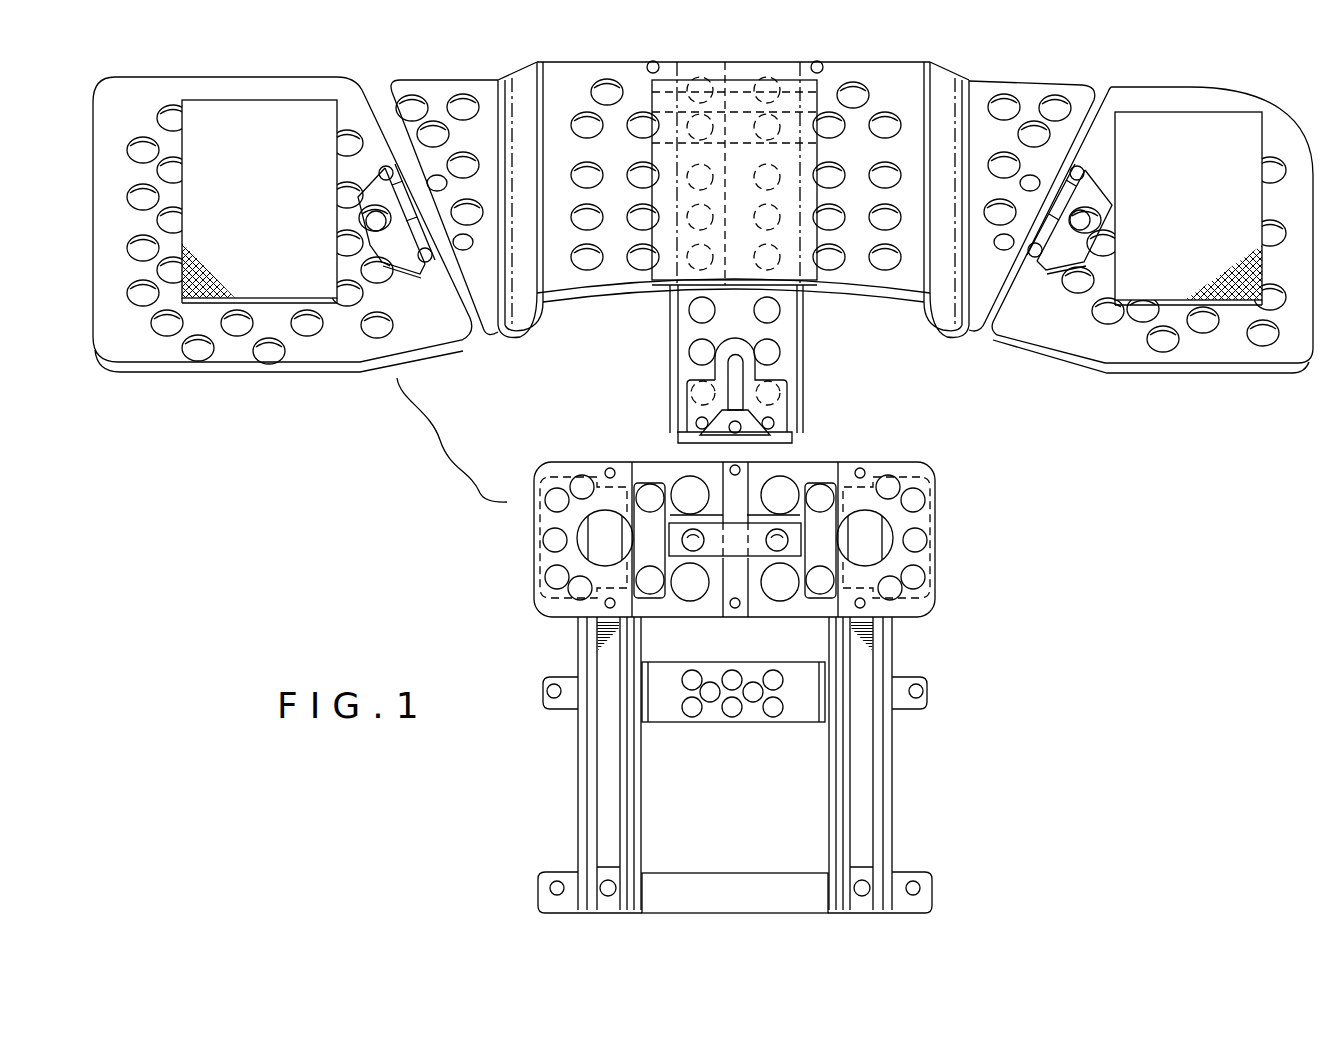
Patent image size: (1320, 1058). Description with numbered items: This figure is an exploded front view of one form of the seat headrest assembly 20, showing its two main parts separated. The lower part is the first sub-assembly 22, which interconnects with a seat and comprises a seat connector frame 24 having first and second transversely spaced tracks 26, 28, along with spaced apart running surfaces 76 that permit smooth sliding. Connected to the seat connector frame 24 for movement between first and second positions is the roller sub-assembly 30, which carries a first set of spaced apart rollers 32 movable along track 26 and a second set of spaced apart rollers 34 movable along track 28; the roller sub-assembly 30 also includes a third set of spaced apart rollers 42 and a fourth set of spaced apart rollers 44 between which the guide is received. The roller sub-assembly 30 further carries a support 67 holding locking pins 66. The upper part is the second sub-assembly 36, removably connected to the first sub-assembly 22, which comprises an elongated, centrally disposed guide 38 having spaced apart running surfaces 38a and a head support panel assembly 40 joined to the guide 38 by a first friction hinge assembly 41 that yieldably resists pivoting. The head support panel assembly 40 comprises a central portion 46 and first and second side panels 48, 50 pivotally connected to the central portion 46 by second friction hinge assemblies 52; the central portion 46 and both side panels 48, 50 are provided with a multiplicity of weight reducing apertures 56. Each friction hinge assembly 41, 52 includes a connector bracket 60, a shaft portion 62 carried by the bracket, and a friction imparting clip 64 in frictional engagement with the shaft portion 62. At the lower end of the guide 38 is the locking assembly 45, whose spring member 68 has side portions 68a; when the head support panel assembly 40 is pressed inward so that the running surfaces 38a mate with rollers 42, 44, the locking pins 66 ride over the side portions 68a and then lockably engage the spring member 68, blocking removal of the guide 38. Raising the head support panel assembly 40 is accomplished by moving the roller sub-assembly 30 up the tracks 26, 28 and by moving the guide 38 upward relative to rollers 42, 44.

The seat headrest assembly 20 is at (533, 380).
The first sub-assembly 22 is at (945, 598).
The seat connector frame 24 is at (895, 767).
The first track 26 is at (580, 648).
The second track 28 is at (892, 648).
The roller sub-assembly 30 is at (910, 462).
The first set of spaced apart rollers 32 is at (537, 567).
The second set of spaced apart rollers 34 is at (933, 567).
The second sub-assembly 36 is at (955, 59).
The guide 38 is at (742, 364).
The running surfaces 38a is at (672, 325).
The head support panel assembly 40 is at (512, 71).
The first friction hinge assembly 41 is at (733, 62).
The third set of spaced apart rollers 42 is at (605, 538).
The fourth set of spaced apart rollers 44 is at (865, 538).
The locking assembly 45 is at (784, 426).
The central portion 46 is at (865, 87).
The first side panel 48 is at (218, 77).
The second side panel 50 is at (1183, 93).
The second friction hinge assemblies 52 is at (387, 197).
The weight reducing apertures 56 is at (410, 108).
The connector bracket 60 is at (363, 207).
The shaft portion 62 is at (413, 262).
The friction imparting clip 64 is at (413, 230).
The locking pins 66 is at (693, 551).
The support 67 is at (735, 547).
The spring member 68 is at (733, 343).
The side portions 68a is at (693, 408).
The running surfaces 76 is at (603, 817).